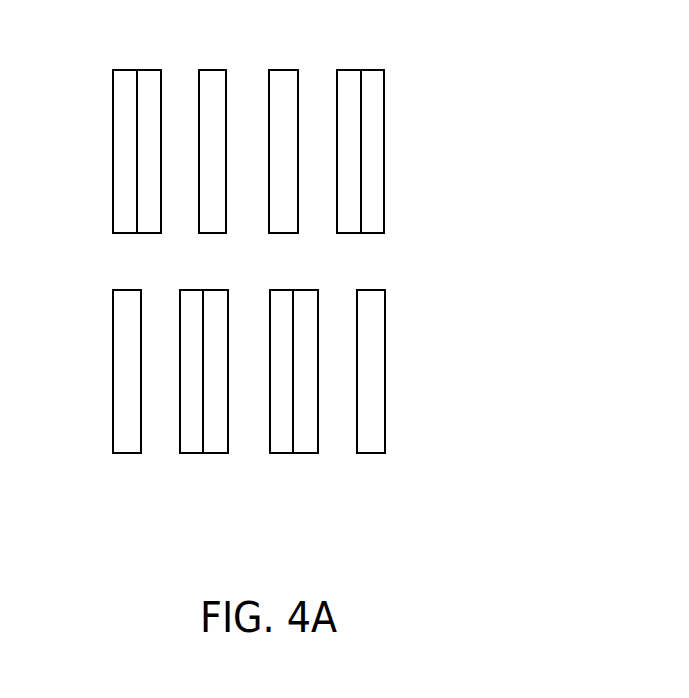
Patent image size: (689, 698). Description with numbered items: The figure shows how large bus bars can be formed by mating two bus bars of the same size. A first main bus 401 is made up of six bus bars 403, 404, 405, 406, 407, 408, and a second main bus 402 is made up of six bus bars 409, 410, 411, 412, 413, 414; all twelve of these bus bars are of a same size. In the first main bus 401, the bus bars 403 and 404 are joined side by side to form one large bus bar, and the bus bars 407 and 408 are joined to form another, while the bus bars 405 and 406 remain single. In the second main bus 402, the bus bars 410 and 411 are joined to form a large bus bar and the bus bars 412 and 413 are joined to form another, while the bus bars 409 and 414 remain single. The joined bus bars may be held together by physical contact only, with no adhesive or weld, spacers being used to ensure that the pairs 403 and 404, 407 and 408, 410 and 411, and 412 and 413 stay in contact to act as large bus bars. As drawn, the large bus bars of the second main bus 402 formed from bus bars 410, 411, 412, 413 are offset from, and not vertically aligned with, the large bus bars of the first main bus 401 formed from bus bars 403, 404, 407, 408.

The first main bus 401 is at (427, 147).
The second main bus 402 is at (427, 386).
The bus bar 403 is at (125, 89).
The bus bar 404 is at (149, 77).
The bus bar 405 is at (213, 77).
The bus bar 406 is at (285, 77).
The bus bar 407 is at (350, 77).
The bus bar 408 is at (372, 84).
The bus bar 409 is at (127, 447).
The bus bar 410 is at (188, 447).
The bus bar 411 is at (215, 447).
The bus bar 412 is at (278, 447).
The bus bar 413 is at (303, 447).
The bus bar 414 is at (370, 447).